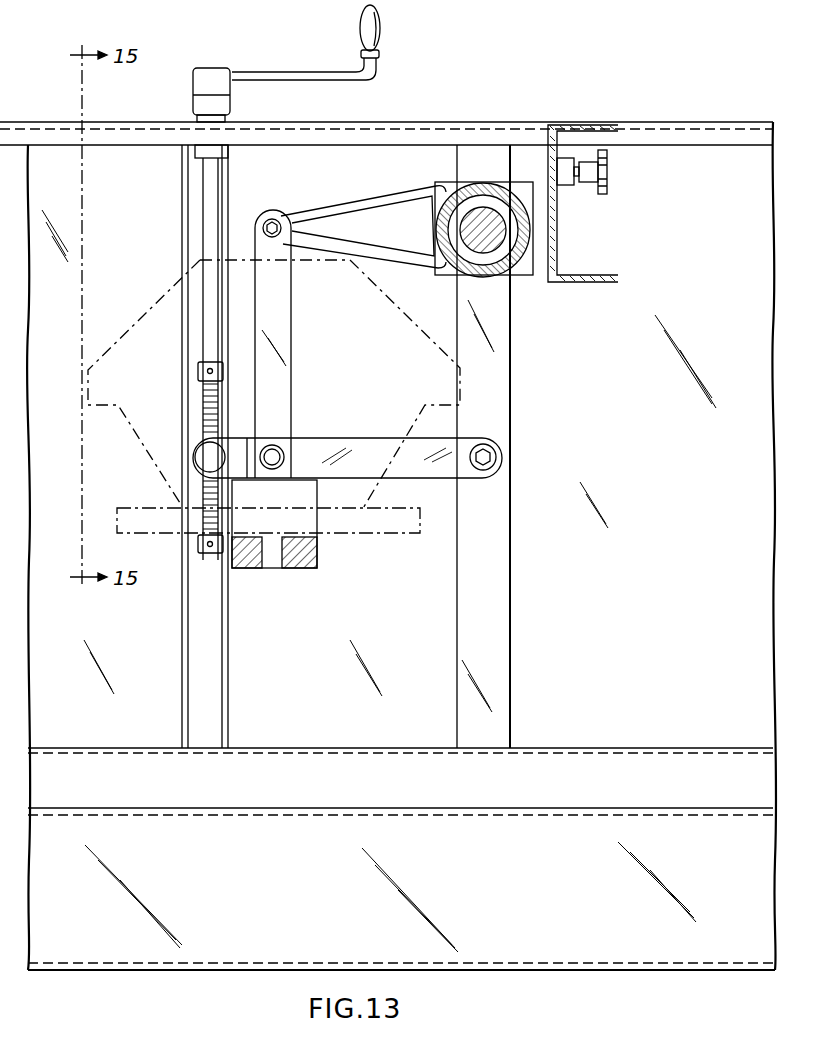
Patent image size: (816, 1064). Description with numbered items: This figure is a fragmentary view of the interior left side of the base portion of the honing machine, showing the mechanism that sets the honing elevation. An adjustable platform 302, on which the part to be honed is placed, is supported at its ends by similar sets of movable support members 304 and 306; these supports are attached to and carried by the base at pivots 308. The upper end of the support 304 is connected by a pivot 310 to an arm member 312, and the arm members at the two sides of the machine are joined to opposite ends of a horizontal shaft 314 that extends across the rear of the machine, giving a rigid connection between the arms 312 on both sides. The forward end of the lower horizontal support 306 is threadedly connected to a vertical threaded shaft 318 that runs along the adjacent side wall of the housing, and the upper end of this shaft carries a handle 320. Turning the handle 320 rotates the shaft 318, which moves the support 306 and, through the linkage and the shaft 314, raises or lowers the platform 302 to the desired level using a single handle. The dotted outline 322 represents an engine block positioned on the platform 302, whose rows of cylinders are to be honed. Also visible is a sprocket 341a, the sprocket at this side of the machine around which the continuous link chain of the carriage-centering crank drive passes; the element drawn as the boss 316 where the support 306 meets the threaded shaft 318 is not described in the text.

The adjustable platform 302 is at (318, 561).
The support member 304 is at (283, 345).
The lower horizontal support 306 is at (322, 442).
The pivot 308 is at (497, 457).
The pivot 310 is at (273, 219).
The arm member 312 is at (333, 200).
The horizontal shaft 314 is at (498, 250).
The boss 316 is at (204, 456).
The vertical threaded shaft 318 is at (205, 392).
The handle 320 is at (380, 38).
The engine block 322 is at (135, 322).
The sprocket 341a is at (590, 186).